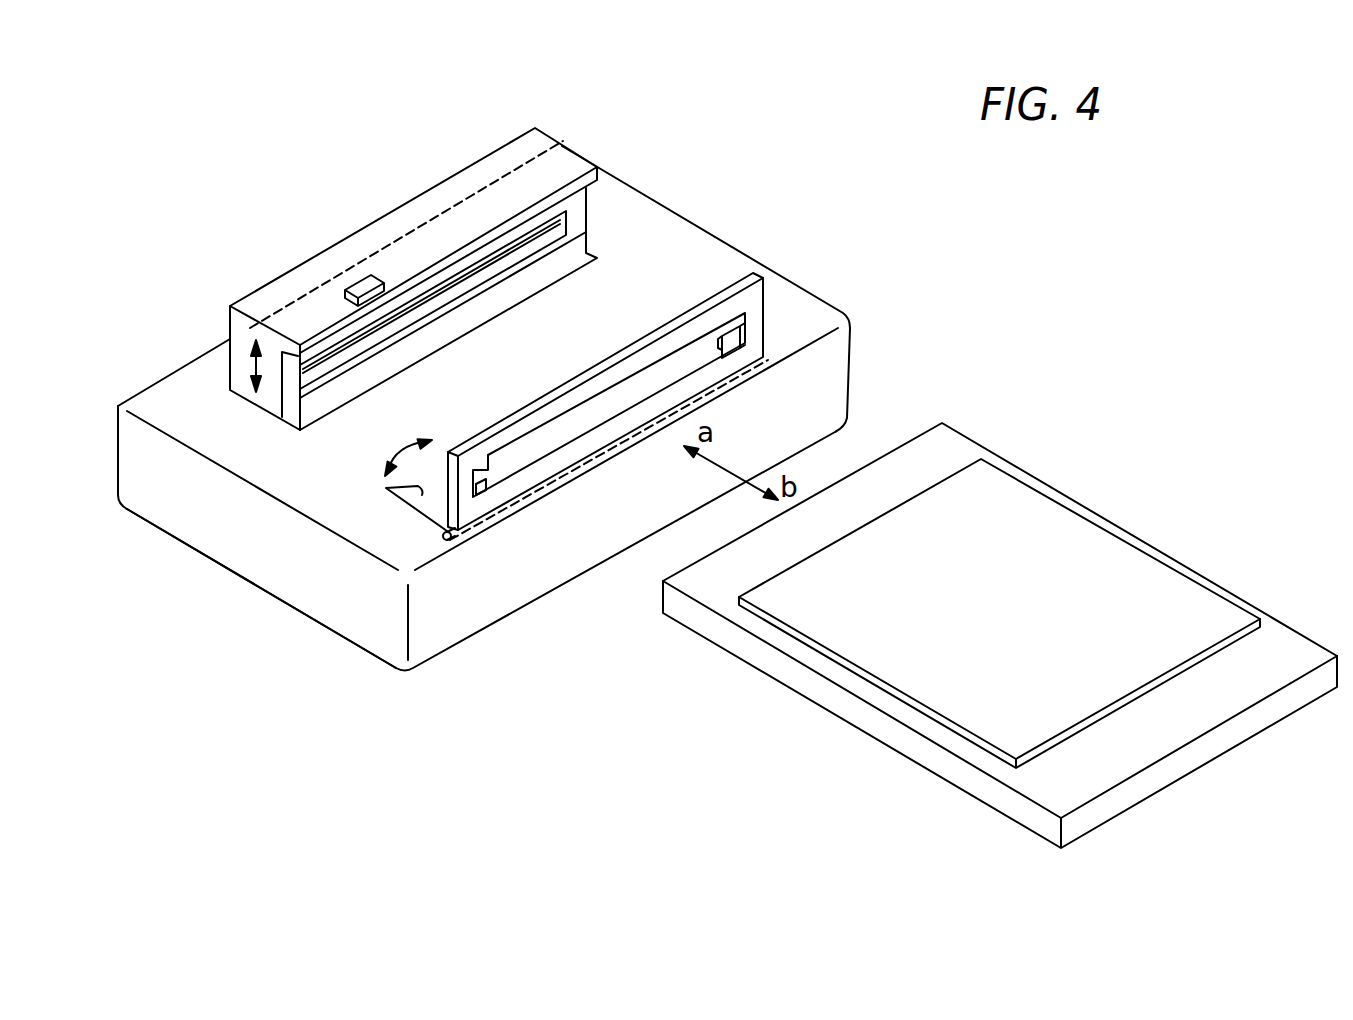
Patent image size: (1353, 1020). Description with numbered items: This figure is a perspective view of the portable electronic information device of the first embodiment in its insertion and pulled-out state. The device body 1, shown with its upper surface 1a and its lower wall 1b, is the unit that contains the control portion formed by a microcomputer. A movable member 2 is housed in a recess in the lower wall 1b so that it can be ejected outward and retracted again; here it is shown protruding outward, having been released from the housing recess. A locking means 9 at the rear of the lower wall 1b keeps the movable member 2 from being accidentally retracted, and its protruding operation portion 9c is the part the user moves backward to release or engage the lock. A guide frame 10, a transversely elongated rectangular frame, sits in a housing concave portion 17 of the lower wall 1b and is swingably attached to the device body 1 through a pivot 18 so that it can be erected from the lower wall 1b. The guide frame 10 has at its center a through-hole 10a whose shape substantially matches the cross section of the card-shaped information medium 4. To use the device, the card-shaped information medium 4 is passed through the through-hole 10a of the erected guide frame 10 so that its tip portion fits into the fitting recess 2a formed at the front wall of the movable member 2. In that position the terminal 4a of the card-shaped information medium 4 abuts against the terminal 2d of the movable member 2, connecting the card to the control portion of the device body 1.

The device body 1 is at (484, 444).
The upper surface 1a is at (360, 650).
The lower wall 1b is at (325, 507).
The movable member 2 is at (401, 268).
The fitting recess 2a is at (512, 258).
The terminal 2d is at (432, 287).
The card-shaped information medium 4 is at (940, 703).
The terminal 4a is at (885, 456).
The locking means 9 is at (285, 289).
The operation portion 9c is at (368, 276).
The guide frame 10 is at (605, 388).
The through-hole 10a is at (672, 357).
The housing concave portion 17 is at (397, 489).
The pivot 18 is at (443, 536).